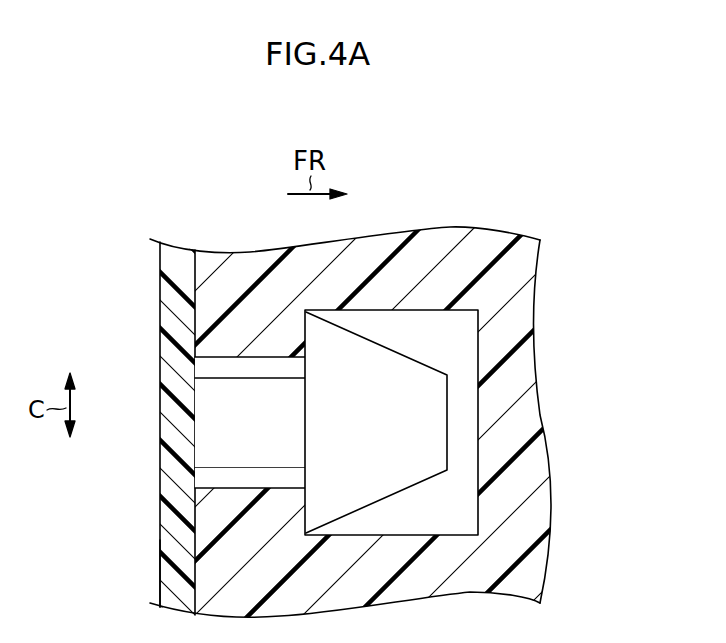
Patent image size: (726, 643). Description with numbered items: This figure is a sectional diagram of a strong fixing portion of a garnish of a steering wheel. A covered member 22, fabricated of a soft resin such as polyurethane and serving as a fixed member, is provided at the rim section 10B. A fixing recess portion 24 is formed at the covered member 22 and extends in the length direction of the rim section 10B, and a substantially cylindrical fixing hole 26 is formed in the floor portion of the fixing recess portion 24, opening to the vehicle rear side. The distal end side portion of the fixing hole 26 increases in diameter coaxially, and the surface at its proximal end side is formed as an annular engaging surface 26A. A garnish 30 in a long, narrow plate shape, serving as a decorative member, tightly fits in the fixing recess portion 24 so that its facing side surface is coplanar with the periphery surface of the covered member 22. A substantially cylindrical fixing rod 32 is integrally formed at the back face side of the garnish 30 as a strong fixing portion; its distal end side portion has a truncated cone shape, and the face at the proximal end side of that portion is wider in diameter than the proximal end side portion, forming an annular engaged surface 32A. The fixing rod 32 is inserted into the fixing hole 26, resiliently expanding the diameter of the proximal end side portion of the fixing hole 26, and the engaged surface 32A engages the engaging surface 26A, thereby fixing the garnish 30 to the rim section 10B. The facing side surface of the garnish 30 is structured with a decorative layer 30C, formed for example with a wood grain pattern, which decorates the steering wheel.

The rim section 10B is at (415, 238).
The covered member 22 is at (528, 496).
The fixing recess portion 24 is at (195, 569).
The fixing hole 26 is at (478, 333).
The engaging surface 26A is at (307, 510).
The garnish 30 is at (160, 276).
The decorative layer 30C is at (198, 411).
The fixing rod 32 is at (449, 415).
The engaged surface 32A is at (304, 337).